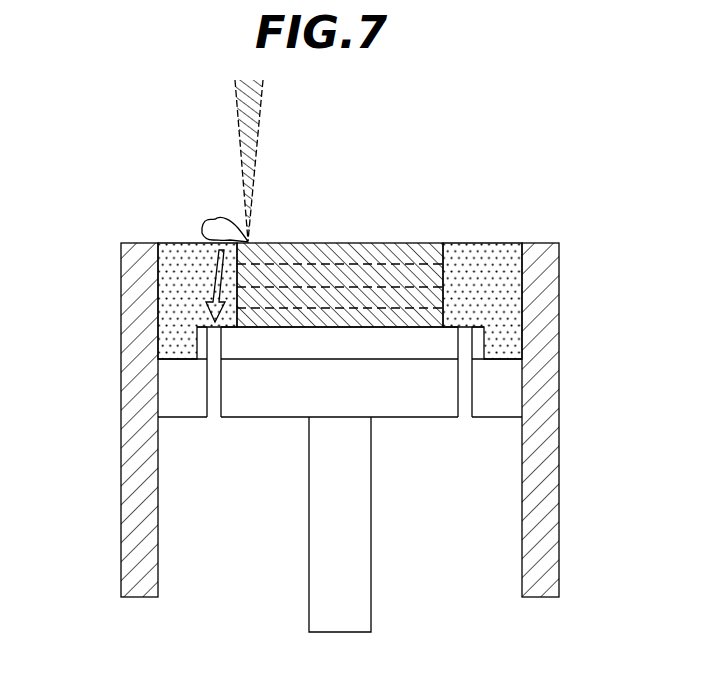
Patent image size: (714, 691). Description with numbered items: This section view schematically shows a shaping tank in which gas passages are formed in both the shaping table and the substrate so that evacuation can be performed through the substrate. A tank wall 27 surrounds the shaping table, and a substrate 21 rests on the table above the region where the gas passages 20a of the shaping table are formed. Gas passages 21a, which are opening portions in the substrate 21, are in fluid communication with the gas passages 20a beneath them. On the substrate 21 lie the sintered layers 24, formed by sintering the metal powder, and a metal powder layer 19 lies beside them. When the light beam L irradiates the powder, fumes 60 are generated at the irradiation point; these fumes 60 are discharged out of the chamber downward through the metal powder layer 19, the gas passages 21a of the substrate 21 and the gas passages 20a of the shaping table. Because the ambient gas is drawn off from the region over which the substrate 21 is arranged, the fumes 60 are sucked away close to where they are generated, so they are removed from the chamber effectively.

The metal powder layer 19 is at (173, 270).
The sintered layers 24 is at (365, 268).
The substrate 21 is at (443, 343).
The gas passages of the substrate 21a is at (214, 342).
The gas passages of the shaping table 20a is at (213, 388).
The tank wall 27 is at (128, 514).
The fumes 60 is at (215, 221).
The light beam L is at (257, 137).